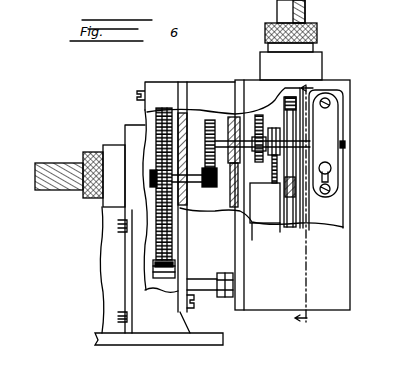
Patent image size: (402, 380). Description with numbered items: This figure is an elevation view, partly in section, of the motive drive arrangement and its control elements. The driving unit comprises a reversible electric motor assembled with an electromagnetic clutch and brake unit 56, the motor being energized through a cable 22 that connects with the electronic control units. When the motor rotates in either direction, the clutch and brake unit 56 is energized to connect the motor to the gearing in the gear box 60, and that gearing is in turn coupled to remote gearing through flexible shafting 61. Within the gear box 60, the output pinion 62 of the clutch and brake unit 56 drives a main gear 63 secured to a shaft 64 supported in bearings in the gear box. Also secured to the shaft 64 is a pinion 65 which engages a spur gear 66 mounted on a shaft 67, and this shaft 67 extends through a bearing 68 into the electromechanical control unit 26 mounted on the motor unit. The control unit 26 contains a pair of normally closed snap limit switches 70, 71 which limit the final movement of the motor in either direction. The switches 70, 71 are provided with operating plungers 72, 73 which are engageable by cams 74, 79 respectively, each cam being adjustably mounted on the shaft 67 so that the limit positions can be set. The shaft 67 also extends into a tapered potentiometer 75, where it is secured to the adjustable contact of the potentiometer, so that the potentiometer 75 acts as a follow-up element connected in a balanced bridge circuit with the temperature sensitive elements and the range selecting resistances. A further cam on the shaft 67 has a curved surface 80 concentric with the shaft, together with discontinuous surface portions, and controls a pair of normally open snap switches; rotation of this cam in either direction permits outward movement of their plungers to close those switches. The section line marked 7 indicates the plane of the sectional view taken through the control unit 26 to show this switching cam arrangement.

The section line 7- 7 is at (307, 208).
The cable 22 is at (305, 14).
The electromechanical control unit 26 is at (345, 270).
The electromagnetic clutch and brake unit 56 is at (105, 298).
The gear box 60 is at (168, 90).
The flexible shafting 61 is at (52, 162).
The output pinion 62 is at (175, 267).
The main gear 63 is at (172, 233).
The shaft 64 is at (183, 182).
The pinion 65 is at (198, 211).
The spur gear 66 is at (205, 120).
The shaft 67 is at (345, 145).
The bearing 68 is at (230, 118).
The snap limit switch 70 is at (262, 228).
The snap limit switch 71 is at (274, 226).
The operating plunger 72 is at (266, 160).
The operating plunger 73 is at (268, 186).
The cam 74 is at (259, 115).
The tapered potentiometer 75 is at (332, 120).
The cam 79 is at (286, 110).
The curved surface 80 is at (291, 96).